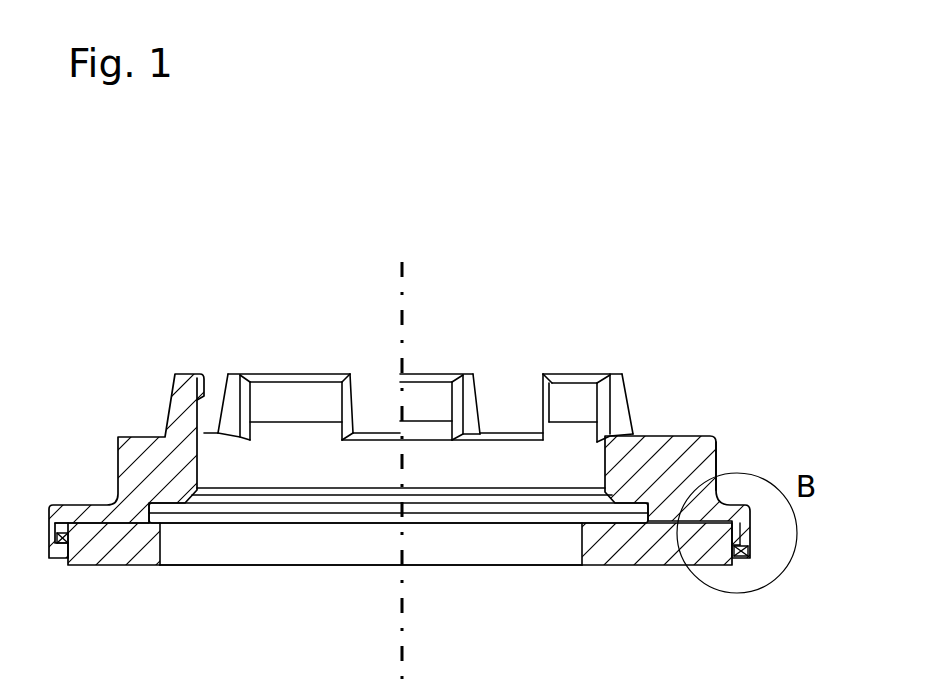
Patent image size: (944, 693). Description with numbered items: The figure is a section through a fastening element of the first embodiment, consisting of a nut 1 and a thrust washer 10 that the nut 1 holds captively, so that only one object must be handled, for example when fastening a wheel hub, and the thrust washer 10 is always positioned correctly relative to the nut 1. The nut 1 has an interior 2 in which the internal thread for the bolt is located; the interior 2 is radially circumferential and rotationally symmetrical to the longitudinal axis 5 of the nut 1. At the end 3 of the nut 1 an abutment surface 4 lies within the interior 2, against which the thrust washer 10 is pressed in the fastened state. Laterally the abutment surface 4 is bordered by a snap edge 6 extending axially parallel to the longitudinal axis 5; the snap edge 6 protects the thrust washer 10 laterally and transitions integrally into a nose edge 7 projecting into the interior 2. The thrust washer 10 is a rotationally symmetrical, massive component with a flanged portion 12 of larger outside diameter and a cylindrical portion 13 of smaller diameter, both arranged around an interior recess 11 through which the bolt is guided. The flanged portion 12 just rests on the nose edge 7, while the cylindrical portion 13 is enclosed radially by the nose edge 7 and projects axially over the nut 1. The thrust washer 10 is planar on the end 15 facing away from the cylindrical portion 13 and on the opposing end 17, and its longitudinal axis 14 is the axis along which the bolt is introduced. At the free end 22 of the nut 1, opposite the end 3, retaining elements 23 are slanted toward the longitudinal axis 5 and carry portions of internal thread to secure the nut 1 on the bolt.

The nut 1 is at (166, 445).
The interior 2 is at (226, 467).
The end 3 is at (401, 582).
The abutment surface 4 is at (113, 523).
The longitudinal axis 5 is at (396, 352).
The snap edge 6 is at (52, 505).
The nose edge 7 is at (730, 553).
The thrust washer 10 is at (147, 555).
The interior recess 11 is at (307, 547).
The flanged portion 12 is at (705, 537).
The cylindrical portion 13 is at (717, 557).
The longitudinal axis of the thrust washer 14 is at (407, 318).
The end 15 is at (672, 527).
The end 17 is at (580, 568).
The free end 22 is at (235, 353).
The retaining elements 23 is at (318, 397).